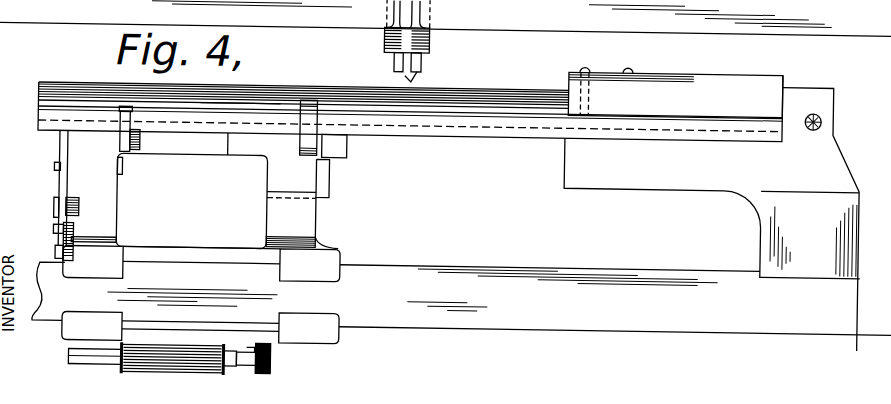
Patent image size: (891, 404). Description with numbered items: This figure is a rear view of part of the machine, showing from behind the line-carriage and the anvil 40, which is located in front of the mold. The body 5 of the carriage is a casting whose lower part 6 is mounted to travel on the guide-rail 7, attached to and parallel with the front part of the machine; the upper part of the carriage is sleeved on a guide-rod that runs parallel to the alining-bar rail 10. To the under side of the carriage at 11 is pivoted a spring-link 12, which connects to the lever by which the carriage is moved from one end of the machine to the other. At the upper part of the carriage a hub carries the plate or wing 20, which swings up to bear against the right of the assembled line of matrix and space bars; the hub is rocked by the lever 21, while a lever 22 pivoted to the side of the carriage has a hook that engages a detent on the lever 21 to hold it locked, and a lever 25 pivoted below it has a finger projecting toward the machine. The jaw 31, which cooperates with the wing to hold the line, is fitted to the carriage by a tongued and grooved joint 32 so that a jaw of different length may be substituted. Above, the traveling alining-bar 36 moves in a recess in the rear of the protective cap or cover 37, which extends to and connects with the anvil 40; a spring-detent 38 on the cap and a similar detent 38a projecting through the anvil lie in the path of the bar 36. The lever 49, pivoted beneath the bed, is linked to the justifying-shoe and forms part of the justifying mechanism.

The body of the carriage 5 is at (108, 199).
The lower part of the carriage 6 is at (188, 245).
The guide-rail 7 is at (483, 291).
The alining-bar rail 10 is at (425, 121).
The pivot on the under side of the carriage 11 is at (280, 347).
The spring-link 12 is at (200, 363).
The wing 20 is at (129, 149).
The lever 21 is at (63, 153).
The lever 22 is at (63, 183).
The lever 25 is at (65, 240).
The jaw 31 is at (313, 178).
The tongued and grooved joint 32 is at (317, 201).
The traveling alining-bar 36 is at (218, 114).
The cap or cover 37 is at (498, 82).
The spring-detent 38 is at (283, 97).
The spring-detent 38a is at (588, 63).
The anvil 40 is at (708, 76).
The lever 49 is at (427, 32).